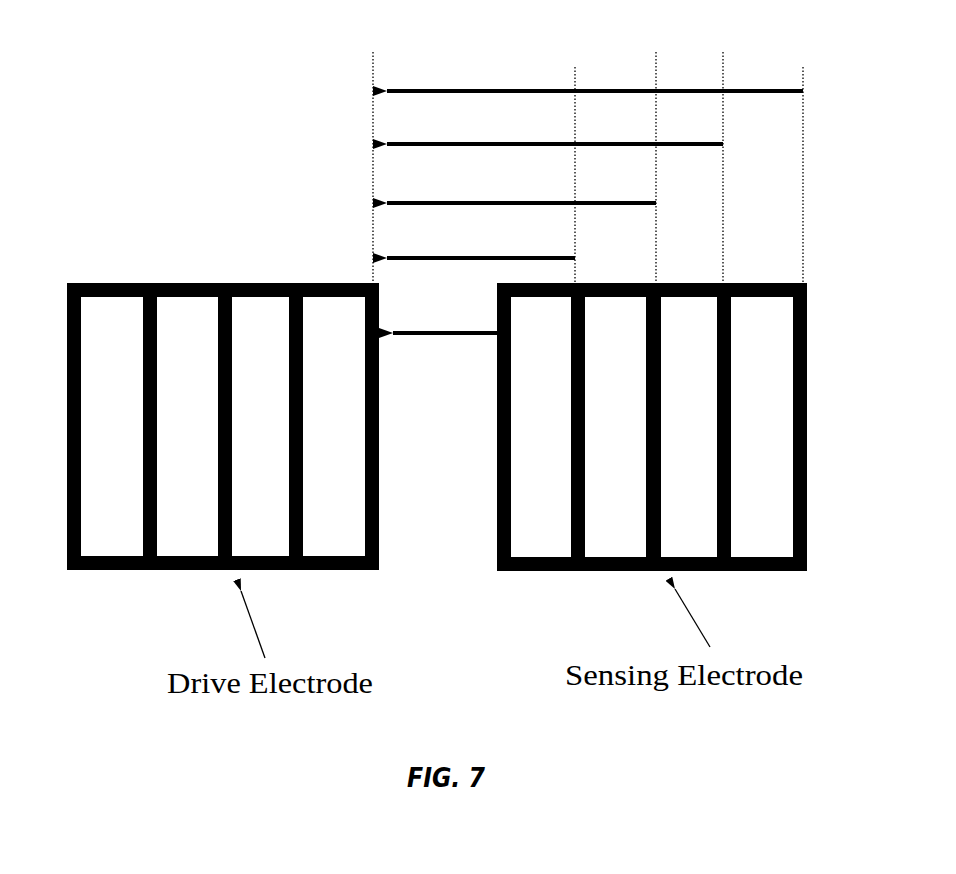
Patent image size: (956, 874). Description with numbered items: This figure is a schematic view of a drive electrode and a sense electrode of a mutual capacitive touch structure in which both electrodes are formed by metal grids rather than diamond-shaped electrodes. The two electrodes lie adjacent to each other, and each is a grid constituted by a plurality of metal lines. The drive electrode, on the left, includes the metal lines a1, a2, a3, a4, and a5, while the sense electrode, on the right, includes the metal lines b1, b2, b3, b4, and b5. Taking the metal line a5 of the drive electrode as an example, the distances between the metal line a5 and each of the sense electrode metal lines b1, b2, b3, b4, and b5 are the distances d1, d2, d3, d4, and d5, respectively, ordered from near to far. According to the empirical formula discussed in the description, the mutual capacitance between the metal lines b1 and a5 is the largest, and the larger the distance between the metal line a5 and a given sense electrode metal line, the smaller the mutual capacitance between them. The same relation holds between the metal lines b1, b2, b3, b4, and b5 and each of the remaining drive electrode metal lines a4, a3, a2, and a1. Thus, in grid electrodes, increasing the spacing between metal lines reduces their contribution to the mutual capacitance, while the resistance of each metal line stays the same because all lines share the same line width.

The metal line a1 is at (70, 451).
The metal line a2 is at (139, 451).
The metal line a3 is at (210, 451).
The metal line a4 is at (286, 451).
The metal line a5 is at (365, 451).
The metal line b1 is at (498, 445).
The metal line b2 is at (568, 445).
The metal line b3 is at (640, 445).
The metal line b4 is at (715, 445).
The metal line b5 is at (796, 445).
The distance d1 is at (445, 317).
The distance d2 is at (481, 242).
The distance d3 is at (521, 182).
The distance d4 is at (555, 124).
The distance d5 is at (595, 65).